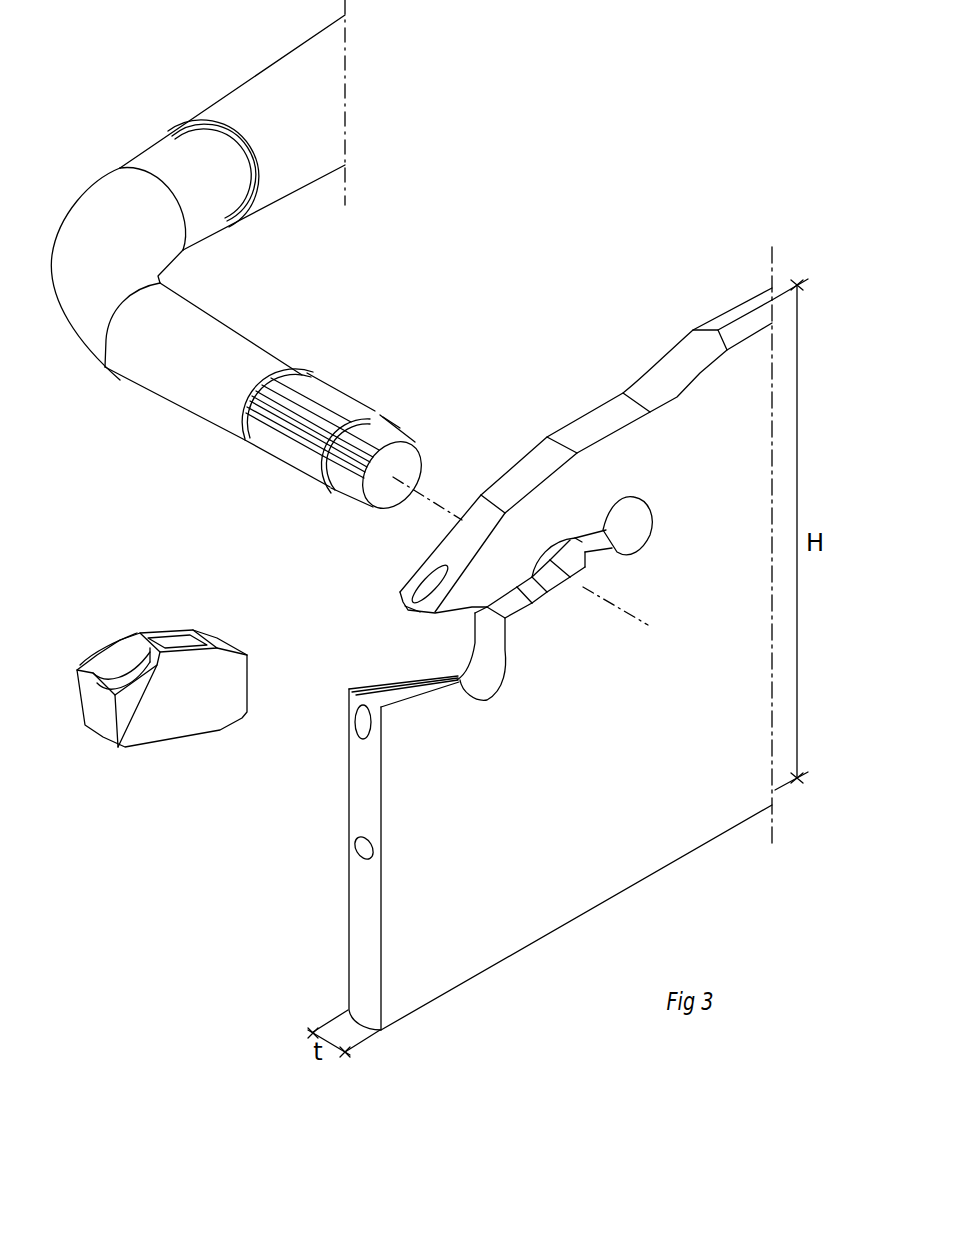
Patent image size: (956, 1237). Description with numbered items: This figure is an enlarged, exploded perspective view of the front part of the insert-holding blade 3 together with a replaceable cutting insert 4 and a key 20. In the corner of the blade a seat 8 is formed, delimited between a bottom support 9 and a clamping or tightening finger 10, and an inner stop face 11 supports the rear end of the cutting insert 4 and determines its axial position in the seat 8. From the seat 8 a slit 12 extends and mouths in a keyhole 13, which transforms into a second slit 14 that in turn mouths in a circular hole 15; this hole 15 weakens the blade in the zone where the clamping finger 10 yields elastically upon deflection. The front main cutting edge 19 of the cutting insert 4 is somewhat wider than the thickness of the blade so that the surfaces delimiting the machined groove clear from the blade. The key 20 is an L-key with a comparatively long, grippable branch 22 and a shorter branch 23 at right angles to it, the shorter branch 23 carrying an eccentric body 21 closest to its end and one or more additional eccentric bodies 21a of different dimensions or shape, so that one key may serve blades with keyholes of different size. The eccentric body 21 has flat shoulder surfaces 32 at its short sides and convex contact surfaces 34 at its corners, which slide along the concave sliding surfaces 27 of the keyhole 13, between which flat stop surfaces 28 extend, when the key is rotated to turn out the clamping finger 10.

The insert-holding blade 3 is at (598, 388).
The cutting insert 4 is at (197, 743).
The seat 8 is at (420, 643).
The bottom support 9 is at (398, 680).
The clamping finger 10 is at (440, 545).
The stop face 11 is at (480, 640).
The slit 12 is at (510, 608).
The keyhole 13 is at (570, 593).
The second slit 14 is at (584, 553).
The circular hole 15 is at (630, 520).
The front main cutting edge 19 is at (103, 685).
The key 20 is at (153, 402).
The eccentric body 21 is at (422, 448).
The additional eccentric body 21a is at (280, 443).
The grippable branch 22 is at (283, 78).
The shorter branch 23 is at (244, 321).
The sliding surfaces 27 is at (567, 566).
The stop surface 28 is at (546, 592).
The shoulder surfaces 32 is at (353, 487).
The contact surfaces 34 is at (358, 450).